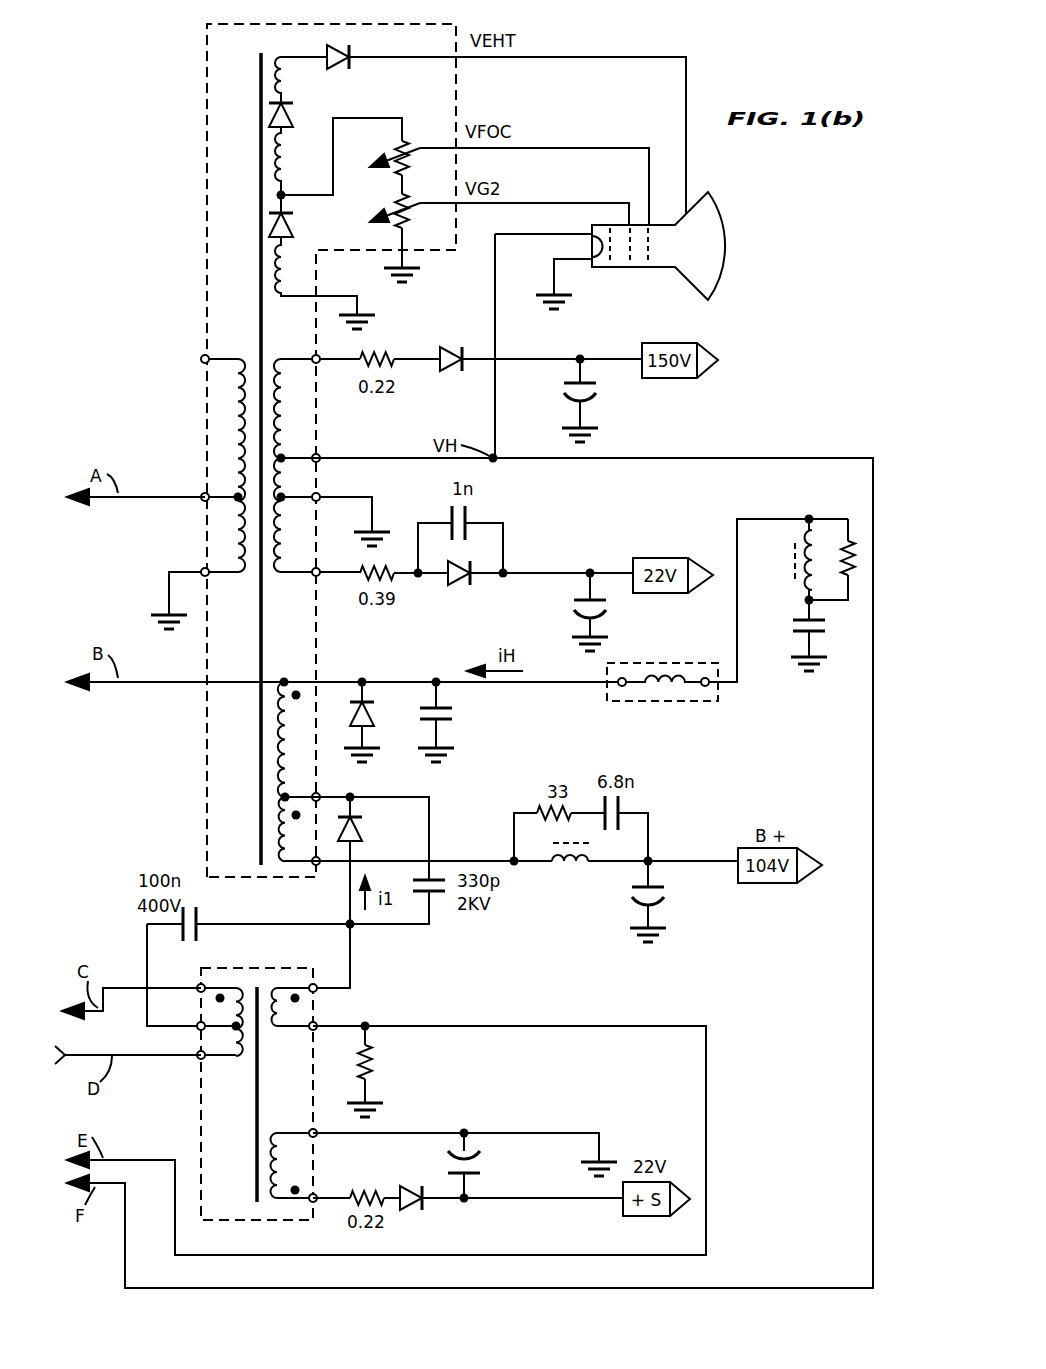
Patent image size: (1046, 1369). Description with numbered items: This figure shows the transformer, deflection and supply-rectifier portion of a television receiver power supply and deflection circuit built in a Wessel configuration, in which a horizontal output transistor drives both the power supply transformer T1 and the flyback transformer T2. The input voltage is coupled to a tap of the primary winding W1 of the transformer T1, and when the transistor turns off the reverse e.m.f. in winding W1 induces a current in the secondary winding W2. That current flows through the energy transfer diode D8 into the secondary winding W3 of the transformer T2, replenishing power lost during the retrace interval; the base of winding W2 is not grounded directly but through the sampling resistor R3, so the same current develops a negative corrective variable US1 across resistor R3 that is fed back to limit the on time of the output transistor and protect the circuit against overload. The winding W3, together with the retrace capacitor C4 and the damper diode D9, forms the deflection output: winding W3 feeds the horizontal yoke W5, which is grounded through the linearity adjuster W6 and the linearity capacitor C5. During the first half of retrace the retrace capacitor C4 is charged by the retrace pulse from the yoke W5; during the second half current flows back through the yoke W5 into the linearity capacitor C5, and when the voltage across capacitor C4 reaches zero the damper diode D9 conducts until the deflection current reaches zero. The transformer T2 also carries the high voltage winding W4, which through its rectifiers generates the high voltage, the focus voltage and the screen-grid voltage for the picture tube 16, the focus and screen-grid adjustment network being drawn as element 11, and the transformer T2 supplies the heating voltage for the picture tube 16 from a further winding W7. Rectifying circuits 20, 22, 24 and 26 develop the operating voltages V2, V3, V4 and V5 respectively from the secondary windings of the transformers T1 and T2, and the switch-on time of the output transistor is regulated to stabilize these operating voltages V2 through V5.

The focus and screen grid voltage divider 11 is at (465, 200).
The picture tube 16 is at (712, 226).
The rectifying circuit 20 is at (462, 418).
The rectifying circuit 22 is at (470, 623).
The rectifying circuit 24 is at (585, 925).
The rectifying circuit 26 is at (380, 1178).
The power supply transformer T1 is at (263, 968).
The flyback transformer T2 is at (207, 62).
The primary winding W1 is at (242, 1058).
The secondary winding W2 is at (274, 1052).
The secondary winding W3 is at (280, 797).
The high voltage winding W4 is at (279, 160).
The horizontal yoke W5 is at (727, 624).
The linearity adjuster W6 is at (808, 568).
The winding W7 is at (276, 422).
The energy transfer diode D8 is at (367, 859).
The damper diode D9 is at (378, 720).
The retrace capacitor C4 is at (461, 720).
The linearity capacitor C5 is at (805, 636).
The sampling resistor R3 is at (389, 1071).
The corrective variable US1 is at (365, 1025).
The operating voltage V2 is at (586, 356).
The operating voltage V3 is at (590, 572).
The operating voltage V4 is at (650, 858).
The operating voltage V5 is at (465, 1202).